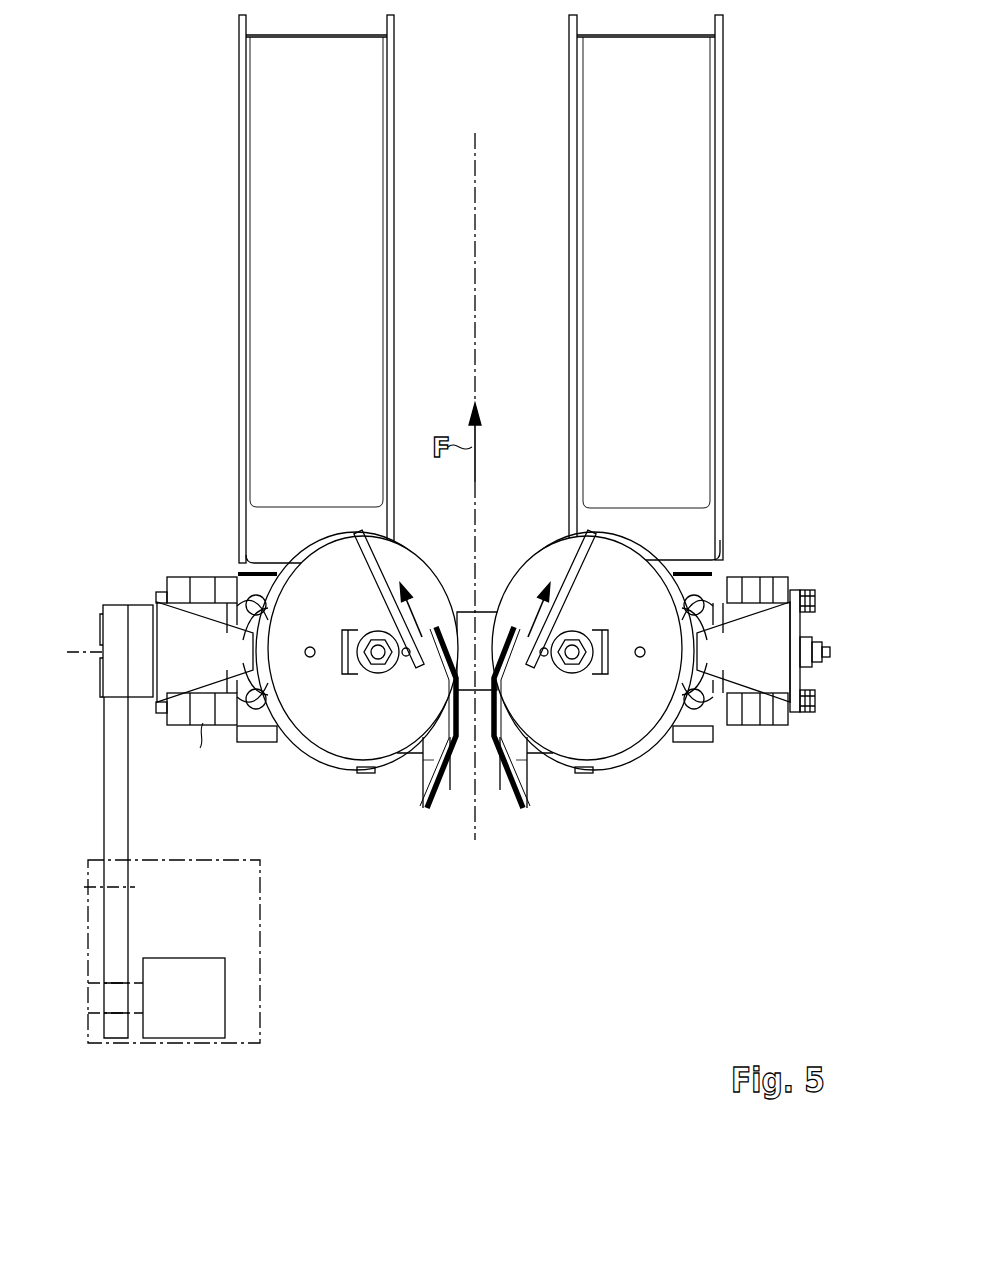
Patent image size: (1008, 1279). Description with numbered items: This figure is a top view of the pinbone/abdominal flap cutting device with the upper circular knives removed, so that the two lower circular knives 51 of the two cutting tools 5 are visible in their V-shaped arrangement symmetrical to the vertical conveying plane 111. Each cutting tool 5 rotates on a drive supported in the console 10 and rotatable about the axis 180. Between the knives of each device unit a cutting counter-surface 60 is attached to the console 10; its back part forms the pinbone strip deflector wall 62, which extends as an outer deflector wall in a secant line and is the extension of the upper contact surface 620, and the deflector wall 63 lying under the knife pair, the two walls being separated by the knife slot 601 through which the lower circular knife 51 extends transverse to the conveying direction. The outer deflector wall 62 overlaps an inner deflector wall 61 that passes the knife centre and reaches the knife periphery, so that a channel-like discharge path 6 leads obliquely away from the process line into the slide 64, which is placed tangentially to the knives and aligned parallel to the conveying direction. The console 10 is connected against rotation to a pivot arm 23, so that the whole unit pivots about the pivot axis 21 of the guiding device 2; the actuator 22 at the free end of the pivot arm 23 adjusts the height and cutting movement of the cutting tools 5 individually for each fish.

The guiding device 2 is at (199, 951).
The cutting tool 5 is at (475, 680).
The discharge path 6 is at (475, 678).
The console 10 is at (497, 612).
The pivot axis 21 is at (138, 886).
The actuator 22 is at (226, 998).
The pivot arm 23 is at (130, 812).
The lower circular knife 51 is at (362, 777).
The cutting counter-surface 60 is at (425, 788).
The inner deflector wall 61 is at (373, 578).
The pinbone strip deflector wall 62 is at (452, 656).
The deflector wall 63 is at (420, 765).
The slide 64 is at (330, 103).
The vertical conveying plane 111 is at (478, 180).
The axis 180 is at (77, 648).
The knife slot 601 is at (423, 762).
The upper contact surface 620 is at (455, 690).